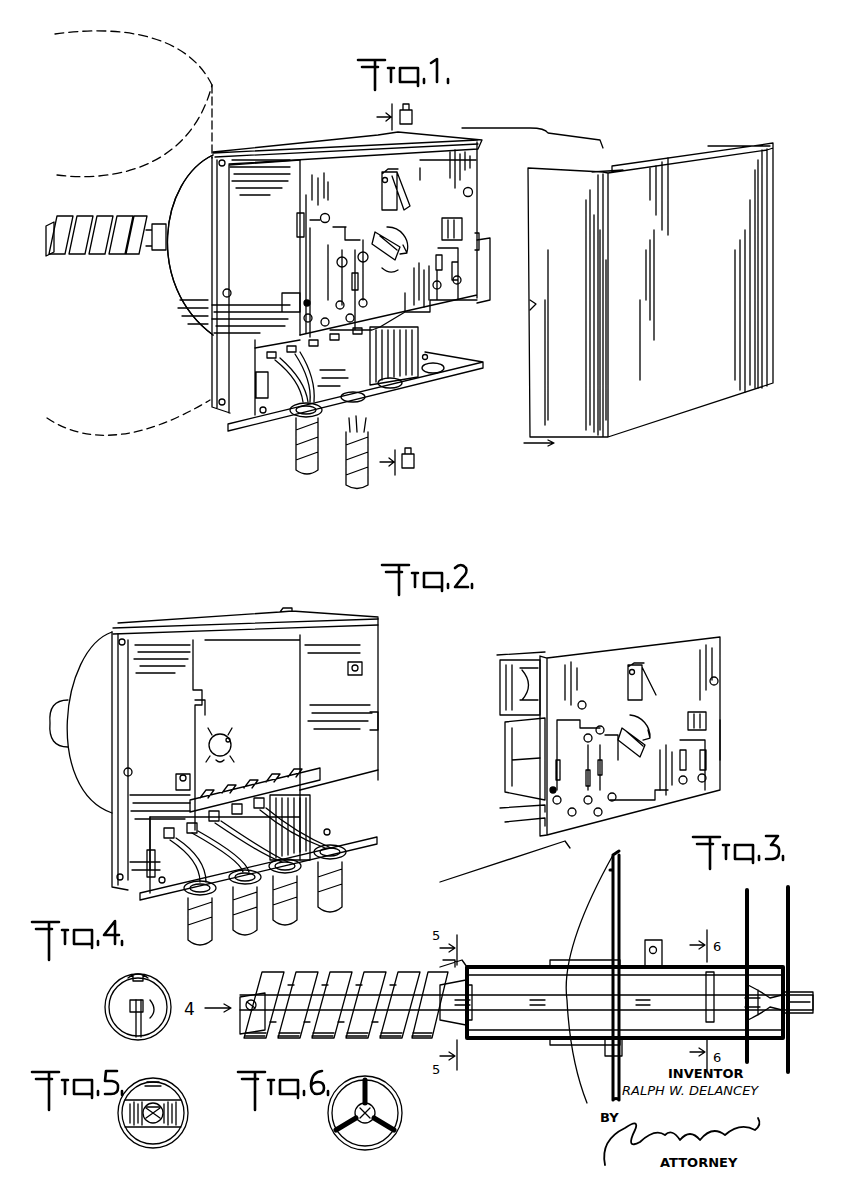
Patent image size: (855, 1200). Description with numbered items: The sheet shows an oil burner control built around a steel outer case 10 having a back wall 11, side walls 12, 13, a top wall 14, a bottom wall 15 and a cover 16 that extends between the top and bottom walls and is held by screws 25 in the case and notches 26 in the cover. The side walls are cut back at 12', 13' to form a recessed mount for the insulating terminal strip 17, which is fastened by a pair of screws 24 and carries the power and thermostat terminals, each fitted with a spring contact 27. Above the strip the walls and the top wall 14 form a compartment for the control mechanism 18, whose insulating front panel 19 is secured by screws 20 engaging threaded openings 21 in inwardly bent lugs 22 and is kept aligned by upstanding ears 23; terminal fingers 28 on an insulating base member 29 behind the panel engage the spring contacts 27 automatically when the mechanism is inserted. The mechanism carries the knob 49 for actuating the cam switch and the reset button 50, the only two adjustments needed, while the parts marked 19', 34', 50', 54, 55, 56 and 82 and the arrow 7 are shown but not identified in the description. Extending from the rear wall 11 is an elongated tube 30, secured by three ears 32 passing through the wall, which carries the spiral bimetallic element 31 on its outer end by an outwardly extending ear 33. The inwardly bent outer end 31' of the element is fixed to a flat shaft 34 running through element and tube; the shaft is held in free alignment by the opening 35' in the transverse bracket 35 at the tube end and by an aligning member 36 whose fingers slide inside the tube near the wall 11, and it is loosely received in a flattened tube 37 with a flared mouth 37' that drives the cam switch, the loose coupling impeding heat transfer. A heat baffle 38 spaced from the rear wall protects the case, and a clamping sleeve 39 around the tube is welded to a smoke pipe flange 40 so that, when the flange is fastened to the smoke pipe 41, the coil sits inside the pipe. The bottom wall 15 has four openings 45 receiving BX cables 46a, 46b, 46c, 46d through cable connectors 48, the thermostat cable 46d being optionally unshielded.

In FIG. 2, the direction of view arrow 7 is at (466, 749).
In FIG. 1, the outer case 10 is at (281, 133).
In FIG. 2, the outer case 10 is at (224, 606).
In FIG. 1, the back wall 11 is at (230, 262).
In FIG. 2, the back wall 11 is at (258, 682).
In FIG. 3, the back wall 11 is at (790, 935).
In FIG. 1, the side wall 12 is at (256, 285).
In FIG. 2, the side wall 12 is at (166, 755).
In FIG. 1, the cut back portion 12' is at (218, 377).
In FIG. 2, the cut back portion 12' is at (112, 847).
In FIG. 1, the side wall 13 is at (495, 240).
In FIG. 2, the side wall 13 is at (339, 717).
In FIG. 2, the cut back portion 13' is at (326, 823).
In FIG. 1, the top wall 14 is at (312, 152).
In FIG. 2, the top wall 14 is at (293, 622).
In FIG. 1, the bottom wall 15 is at (468, 362).
In FIG. 2, the bottom wall 15 is at (370, 840).
In FIG. 1, the cover 16 is at (711, 398).
In FIG. 1, the terminal strip 17 is at (308, 365).
In FIG. 2, the terminal strip 17 is at (313, 770).
In FIG. 1, the control mechanism 18 is at (445, 155).
In FIG. 2, the control mechanism 18 is at (662, 818).
In FIG. 1, the front panel 19 is at (466, 161).
In FIG. 2, the front panel 19 is at (693, 774).
In FIG. 1, the panel flange 19' is at (435, 340).
In FIG. 1, the screws 20 is at (472, 190).
In FIG. 2, the screws 20 is at (716, 680).
In FIG. 2, the threaded openings 21 is at (358, 668).
In FIG. 2, the lugs 22 is at (355, 660).
In FIG. 1, the upstanding ears 23 is at (294, 222).
In FIG. 2, the upstanding ears 23 is at (375, 712).
In FIG. 1, the screws 24 is at (262, 418).
In FIG. 2, the screws 24 is at (330, 830).
In FIG. 1, the screws 25 is at (232, 293).
In FIG. 2, the screws 25 is at (122, 770).
In FIG. 1, the notches 26 is at (536, 305).
In FIG. 2, the spring contact 27 is at (225, 790).
In FIG. 2, the terminal fingers 28 is at (500, 812).
In FIG. 2, the base member 29 is at (510, 825).
In FIG. 1, the tubular member 30 is at (158, 250).
In FIG. 2, the tubular member 30 is at (58, 705).
In FIG. 3, the tubular member 30 is at (482, 967).
In FIG. 4, the tubular member 30 is at (138, 1007).
In FIG. 5, the tubular member 30 is at (135, 1145).
In FIG. 6, the tubular member 30 is at (393, 1145).
In FIG. 1, the bimetallic element 31 is at (96, 220).
In FIG. 3, the bimetallic element 31 is at (346, 1022).
In FIG. 4, the bimetallic element 31 is at (163, 1028).
In FIG. 3, the outer end 31' is at (228, 1024).
In FIG. 4, the outer end 31' is at (160, 1003).
In FIG. 2, the ears 32 is at (208, 748).
In FIG. 3, the ear 33 is at (467, 966).
In FIG. 4, the ear 33 is at (112, 988).
In FIG. 5, the ear 33 is at (150, 1082).
In FIG. 3, the flat shaft 34 is at (526, 1007).
In FIG. 4, the flat shaft 34 is at (115, 1028).
In FIG. 5, the flat shaft 34 is at (179, 1111).
In FIG. 6, the flat shaft 34 is at (343, 1138).
In FIG. 3, the shaft portion 34' is at (764, 969).
In FIG. 3, the bracket member 35 is at (446, 1021).
In FIG. 5, the bracket member 35 is at (172, 1118).
In FIG. 3, the opening 35' is at (494, 998).
In FIG. 5, the opening 35' is at (179, 1085).
In FIG. 3, the aligning member 36 is at (715, 998).
In FIG. 6, the aligning member 36 is at (390, 1128).
In FIG. 3, the flattened tube 37 is at (799, 983).
In FIG. 3, the flared mouth 37' is at (752, 1008).
In FIG. 1, the heat baffle 38 is at (216, 210).
In FIG. 2, the heat baffle 38 is at (110, 822).
In FIG. 3, the heat baffle 38 is at (750, 910).
In FIG. 3, the clamping sleeve 39 is at (655, 942).
In FIG. 1, the smoke pipe flange 40 is at (176, 272).
In FIG. 2, the smoke pipe flange 40 is at (100, 650).
In FIG. 3, the smoke pipe flange 40 is at (615, 915).
In FIG. 1, the smoke pipe 41 is at (212, 85).
In FIG. 1, the openings 45 is at (375, 419).
In FIG. 2, the openings 45 is at (195, 890).
In FIG. 1, the BX cable 46a is at (312, 470).
In FIG. 2, the BX cable 46a is at (197, 935).
In FIG. 1, the BX cable 46b is at (357, 480).
In FIG. 2, the BX cable 46b is at (243, 925).
In FIG. 2, the BX cable 46c is at (290, 905).
In FIG. 2, the BX cable 46d is at (340, 890).
In FIG. 1, the cable connectors 48 is at (297, 425).
In FIG. 2, the cable connectors 48 is at (345, 855).
In FIG. 1, the knob 49 is at (400, 240).
In FIG. 2, the knob 49 is at (648, 730).
In FIG. 1, the reset button 50 is at (406, 183).
In FIG. 2, the reset button 50 is at (658, 676).
In FIG. 1, the switch pivot 50' is at (362, 179).
In FIG. 2, the switch pivot 50' is at (625, 649).
In FIG. 2, the relay 54 is at (532, 653).
In FIG. 2, the bracket 55 is at (500, 742).
In FIG. 1, the terminal block 56 is at (458, 218).
In FIG. 2, the terminal block 56 is at (706, 718).
In FIG. 2, the screw hole 82 is at (230, 735).